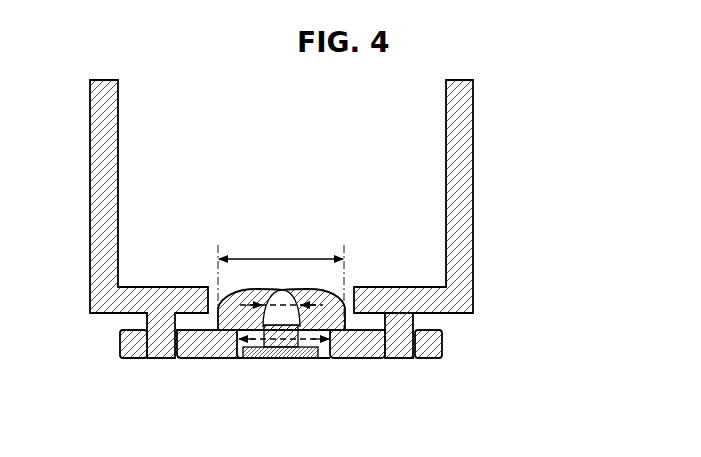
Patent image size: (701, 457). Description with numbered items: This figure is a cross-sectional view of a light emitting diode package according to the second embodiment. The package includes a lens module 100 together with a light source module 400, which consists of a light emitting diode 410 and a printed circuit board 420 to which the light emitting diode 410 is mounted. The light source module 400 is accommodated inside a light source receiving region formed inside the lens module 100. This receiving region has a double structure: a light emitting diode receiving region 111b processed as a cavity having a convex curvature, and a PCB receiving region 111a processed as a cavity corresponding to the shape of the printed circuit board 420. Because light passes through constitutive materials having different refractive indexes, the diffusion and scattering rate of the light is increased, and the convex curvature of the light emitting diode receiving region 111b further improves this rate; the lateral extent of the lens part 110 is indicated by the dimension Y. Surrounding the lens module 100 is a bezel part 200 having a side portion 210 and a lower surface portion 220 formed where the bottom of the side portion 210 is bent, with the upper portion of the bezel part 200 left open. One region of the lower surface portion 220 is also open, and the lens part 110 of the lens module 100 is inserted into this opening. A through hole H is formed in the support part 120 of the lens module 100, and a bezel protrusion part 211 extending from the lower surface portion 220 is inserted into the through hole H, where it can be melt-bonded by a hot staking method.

The lens module 100 is at (217, 358).
The lens part 110 is at (279, 275).
The PCB receiving region 111a is at (306, 330).
The light emitting diode receiving region 111b is at (283, 305).
The support part 120 is at (122, 338).
The bezel part 200 is at (358, 219).
The side portion 210 is at (461, 253).
The lower surface portion 220 is at (430, 302).
The bezel protrusion part 211 is at (407, 328).
The light source module 400 is at (281, 385).
The light emitting diode 410 is at (285, 343).
The printed circuit board 420 is at (276, 353).
The lens width Y is at (281, 284).
The through hole H is at (147, 358).